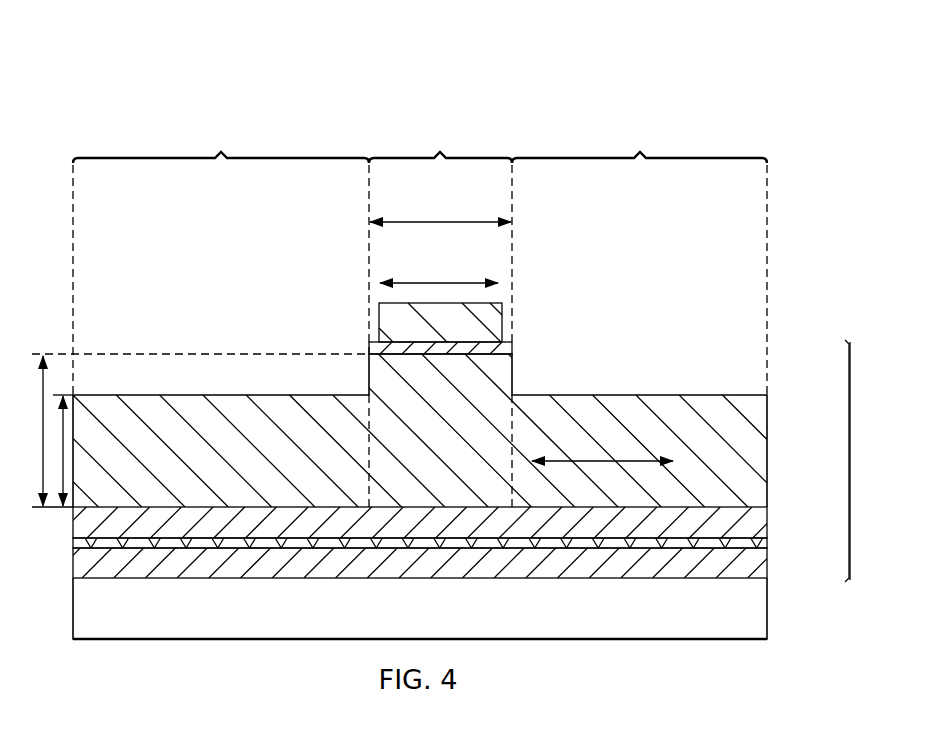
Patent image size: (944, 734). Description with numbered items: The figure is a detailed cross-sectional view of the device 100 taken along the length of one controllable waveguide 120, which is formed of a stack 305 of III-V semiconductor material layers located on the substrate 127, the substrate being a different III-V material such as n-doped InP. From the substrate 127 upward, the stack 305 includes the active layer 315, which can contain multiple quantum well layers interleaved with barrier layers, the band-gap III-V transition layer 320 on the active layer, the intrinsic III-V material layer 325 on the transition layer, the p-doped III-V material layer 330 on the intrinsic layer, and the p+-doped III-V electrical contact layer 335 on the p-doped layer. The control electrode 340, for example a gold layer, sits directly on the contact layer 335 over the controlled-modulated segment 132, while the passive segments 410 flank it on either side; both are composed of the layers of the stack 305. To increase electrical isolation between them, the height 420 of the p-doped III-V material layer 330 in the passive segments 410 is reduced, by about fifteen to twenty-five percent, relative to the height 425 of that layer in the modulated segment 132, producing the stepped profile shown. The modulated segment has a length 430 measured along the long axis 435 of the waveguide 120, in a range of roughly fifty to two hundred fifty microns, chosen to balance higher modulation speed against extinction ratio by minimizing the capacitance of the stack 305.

The device 100 is at (178, 70).
The passive segments 410 is at (420, 259).
The controlled-modulated segment 132 is at (440, 315).
The length 430 is at (440, 222).
The long axis 435 is at (440, 283).
The stack 305 is at (688, 304).
The control electrode 340 is at (379, 324).
The p+-doped III-V electrical contact layer 335 is at (513, 348).
The p-doped III-V material layer 330 is at (706, 402).
The intrinsic III-V material layer 325 is at (762, 526).
The band-gap III-V transition layer 320 is at (762, 544).
The active layer 315 is at (762, 572).
The substrate 127 is at (401, 623).
The controllable waveguide 120 is at (851, 374).
The height 425 is at (35, 380).
The height 420 is at (58, 490).